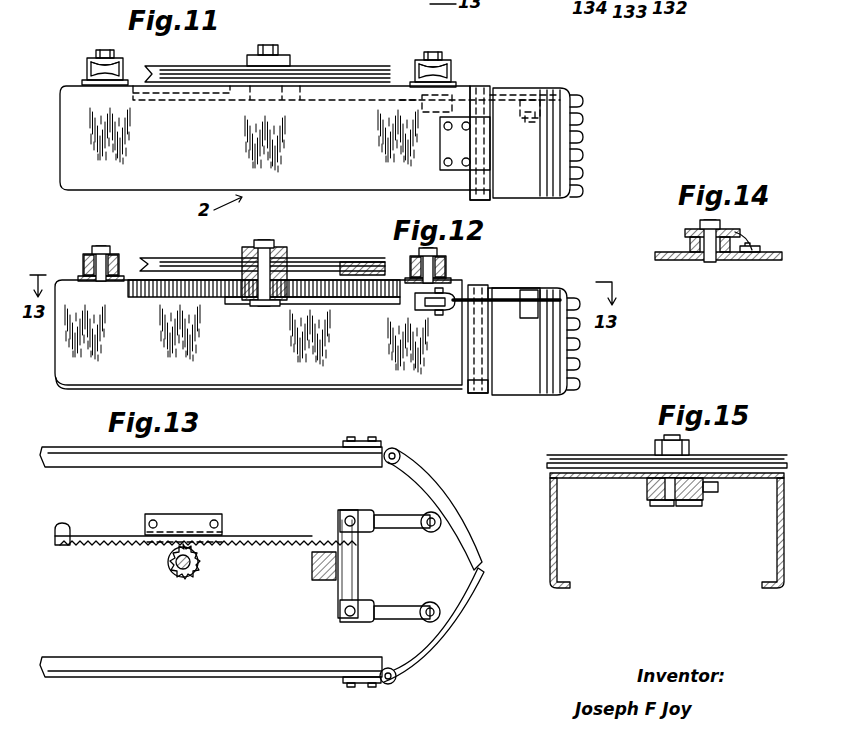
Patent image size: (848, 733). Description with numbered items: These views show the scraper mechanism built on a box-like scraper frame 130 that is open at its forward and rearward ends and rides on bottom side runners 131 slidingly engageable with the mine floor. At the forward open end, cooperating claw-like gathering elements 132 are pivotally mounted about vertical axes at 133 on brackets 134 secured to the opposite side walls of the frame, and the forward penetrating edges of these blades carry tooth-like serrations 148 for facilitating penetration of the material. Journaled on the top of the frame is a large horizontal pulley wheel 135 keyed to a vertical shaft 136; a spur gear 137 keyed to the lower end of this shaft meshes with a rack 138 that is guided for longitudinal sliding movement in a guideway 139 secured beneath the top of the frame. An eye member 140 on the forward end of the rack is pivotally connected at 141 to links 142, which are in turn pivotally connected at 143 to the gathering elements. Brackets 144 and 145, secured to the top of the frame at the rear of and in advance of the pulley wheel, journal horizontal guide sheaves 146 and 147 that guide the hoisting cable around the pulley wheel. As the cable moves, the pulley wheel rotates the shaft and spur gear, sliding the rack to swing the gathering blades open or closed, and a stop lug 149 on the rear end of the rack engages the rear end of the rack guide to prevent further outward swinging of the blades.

In FIG. 11, the scraper frame 130 is at (198, 112).
In FIG. 12, the scraper frame 130 is at (180, 316).
In FIG. 13, the scraper frame 130 is at (245, 448).
In FIG. 14, the scraper frame 130 is at (696, 262).
In FIG. 15, the scraper frame 130 is at (779, 522).
In FIG. 12, the bottom side runner 131 is at (128, 366).
In FIG. 13, the bottom side runner 131 is at (136, 468).
In FIG. 15, the bottom side runner 131 is at (562, 590).
In FIG. 11, the gathering element 132 is at (548, 152).
In FIG. 12, the gathering element 132 is at (545, 363).
In FIG. 13, the gathering element 132 is at (428, 480).
In FIG. 11, the pivot 133 is at (482, 199).
In FIG. 12, the pivot 133 is at (476, 394).
In FIG. 13, the pivot 133 is at (395, 450).
In FIG. 11, the bracket 134 is at (472, 136).
In FIG. 12, the bracket 134 is at (478, 332).
In FIG. 13, the bracket 134 is at (360, 440).
In FIG. 11, the pulley wheel 135 is at (178, 54).
In FIG. 12, the pulley wheel 135 is at (165, 255).
In FIG. 15, the pulley wheel 135 is at (590, 445).
In FIG. 11, the vertical shaft 136 is at (270, 50).
In FIG. 12, the vertical shaft 136 is at (290, 236).
In FIG. 15, the vertical shaft 136 is at (668, 502).
In FIG. 11, the spur gear 137 is at (288, 112).
In FIG. 12, the spur gear 137 is at (288, 306).
In FIG. 13, the spur gear 137 is at (184, 582).
In FIG. 15, the spur gear 137 is at (656, 500).
In FIG. 11, the rack 138 is at (180, 97).
In FIG. 12, the rack 138 is at (318, 272).
In FIG. 13, the rack 138 is at (290, 527).
In FIG. 15, the rack 138 is at (684, 502).
In FIG. 11, the guideway 139 is at (240, 102).
In FIG. 12, the guideway 139 is at (238, 304).
In FIG. 13, the guideway 139 is at (220, 491).
In FIG. 15, the guideway 139 is at (700, 504).
In FIG. 11, the eye member 140 is at (398, 112).
In FIG. 12, the eye member 140 is at (422, 302).
In FIG. 13, the eye member 140 is at (326, 572).
In FIG. 11, the pivotal connection 141 is at (448, 98).
In FIG. 12, the pivotal connection 141 is at (432, 306).
In FIG. 13, the pivotal connection 141 is at (350, 512).
In FIG. 11, the link 142 is at (512, 95).
In FIG. 12, the link 142 is at (500, 292).
In FIG. 13, the link 142 is at (395, 499).
In FIG. 11, the pivotal connection 143 is at (536, 106).
In FIG. 12, the pivotal connection 143 is at (530, 294).
In FIG. 13, the pivotal connection 143 is at (440, 520).
In FIG. 11, the bracket 144 is at (102, 50).
In FIG. 12, the bracket 144 is at (100, 246).
In FIG. 14, the bracket 144 is at (700, 229).
In FIG. 11, the bracket 145 is at (434, 63).
In FIG. 12, the bracket 145 is at (410, 251).
In FIG. 11, the rear guide sheave 146 is at (92, 70).
In FIG. 12, the rear guide sheave 146 is at (92, 268).
In FIG. 14, the rear guide sheave 146 is at (738, 237).
In FIG. 11, the front guide sheave 147 is at (446, 72).
In FIG. 12, the front guide sheave 147 is at (443, 274).
In FIG. 11, the tooth-like serrations 148 is at (578, 108).
In FIG. 12, the tooth-like serrations 148 is at (580, 362).
In FIG. 12, the stop lug 149 is at (133, 280).
In FIG. 13, the stop lug 149 is at (62, 546).